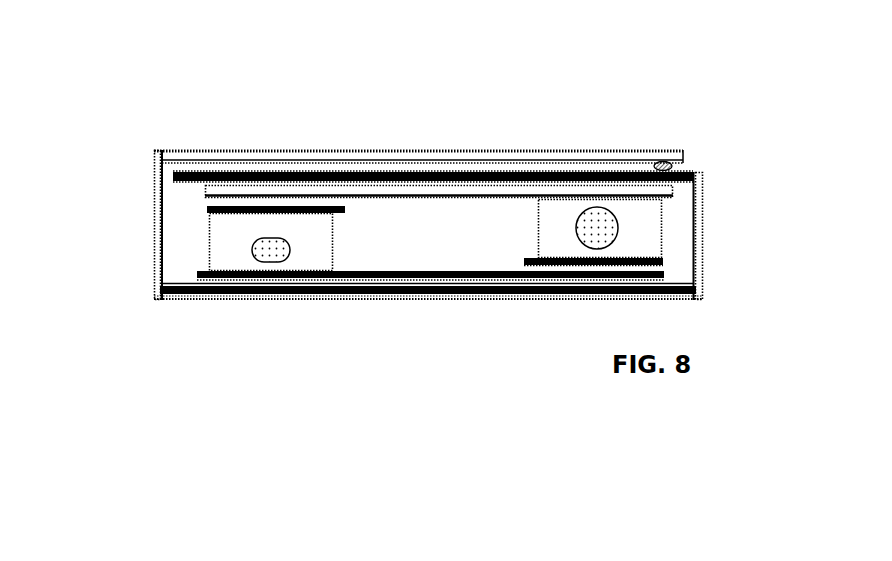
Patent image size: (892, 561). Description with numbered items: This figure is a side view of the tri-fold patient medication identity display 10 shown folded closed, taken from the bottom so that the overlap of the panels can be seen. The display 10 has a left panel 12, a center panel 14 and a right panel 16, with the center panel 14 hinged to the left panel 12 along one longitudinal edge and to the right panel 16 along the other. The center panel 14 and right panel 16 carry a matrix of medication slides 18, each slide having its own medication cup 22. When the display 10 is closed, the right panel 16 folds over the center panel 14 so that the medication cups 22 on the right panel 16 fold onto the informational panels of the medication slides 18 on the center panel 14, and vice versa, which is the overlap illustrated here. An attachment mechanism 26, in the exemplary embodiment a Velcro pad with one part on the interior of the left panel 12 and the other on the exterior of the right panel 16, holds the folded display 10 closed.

The patient medication identity display 10 is at (383, 234).
The left panel 12 is at (419, 149).
The center panel 14 is at (273, 284).
The right panel 16 is at (173, 176).
The medication slides 18 is at (430, 350).
The medication cup 22 is at (434, 282).
The attachment mechanism 26 is at (680, 164).